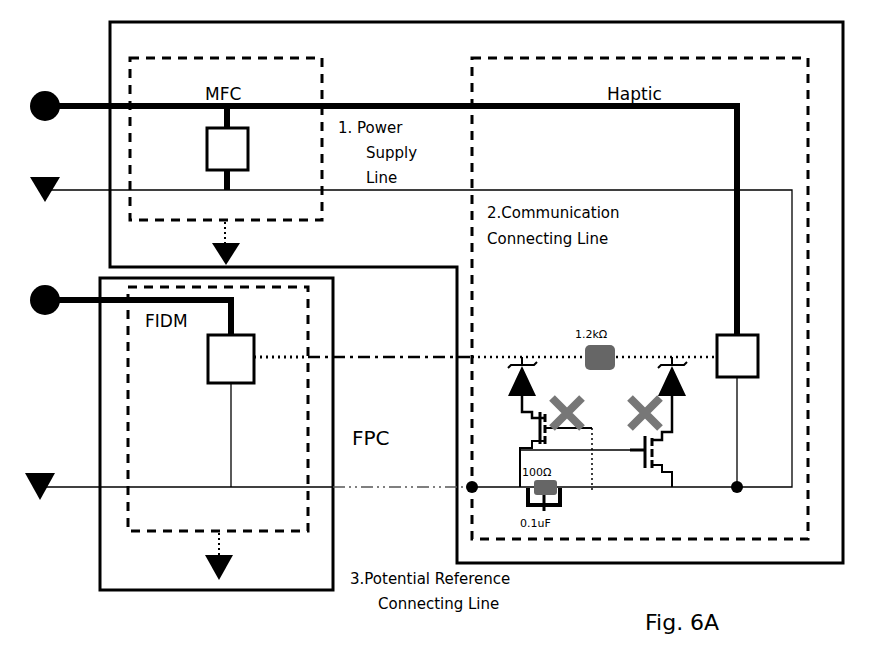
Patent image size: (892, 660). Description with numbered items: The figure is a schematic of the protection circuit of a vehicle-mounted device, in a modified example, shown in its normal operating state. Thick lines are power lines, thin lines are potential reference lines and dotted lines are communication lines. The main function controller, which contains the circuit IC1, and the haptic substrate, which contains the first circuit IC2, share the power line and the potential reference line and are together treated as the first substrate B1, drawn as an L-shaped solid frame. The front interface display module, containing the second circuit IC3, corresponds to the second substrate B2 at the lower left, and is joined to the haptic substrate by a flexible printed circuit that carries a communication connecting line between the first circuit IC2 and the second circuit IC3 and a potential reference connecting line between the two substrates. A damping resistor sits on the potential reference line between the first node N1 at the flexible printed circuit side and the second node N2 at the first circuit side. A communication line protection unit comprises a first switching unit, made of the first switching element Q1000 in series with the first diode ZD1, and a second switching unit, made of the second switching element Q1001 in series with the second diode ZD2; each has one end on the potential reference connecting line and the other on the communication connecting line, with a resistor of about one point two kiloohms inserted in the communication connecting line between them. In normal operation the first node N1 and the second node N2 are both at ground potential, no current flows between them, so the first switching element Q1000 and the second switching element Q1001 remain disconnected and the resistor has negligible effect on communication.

The first substrate B1 is at (476, 292).
The second substrate B2 is at (216, 434).
The circuit IC1 is at (227, 149).
The first circuit IC2 is at (231, 359).
The second circuit IC3 is at (737, 356).
The first diode ZD1 is at (508, 376).
The second diode ZD2 is at (684, 376).
The first switching element Q1000 is at (538, 444).
The second switching element Q1001 is at (668, 441).
The first node N1 is at (478, 481).
The second node N2 is at (744, 481).